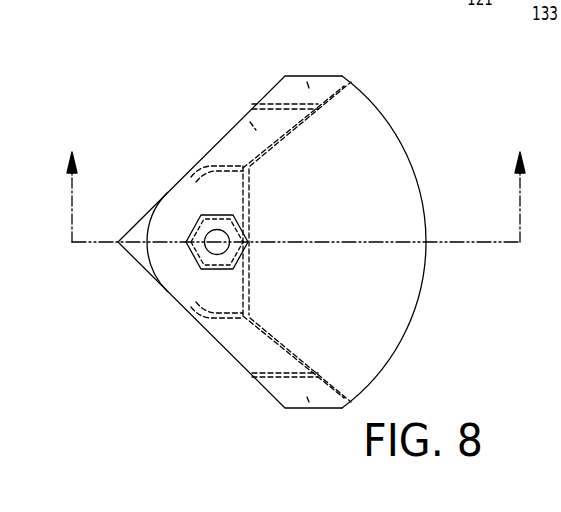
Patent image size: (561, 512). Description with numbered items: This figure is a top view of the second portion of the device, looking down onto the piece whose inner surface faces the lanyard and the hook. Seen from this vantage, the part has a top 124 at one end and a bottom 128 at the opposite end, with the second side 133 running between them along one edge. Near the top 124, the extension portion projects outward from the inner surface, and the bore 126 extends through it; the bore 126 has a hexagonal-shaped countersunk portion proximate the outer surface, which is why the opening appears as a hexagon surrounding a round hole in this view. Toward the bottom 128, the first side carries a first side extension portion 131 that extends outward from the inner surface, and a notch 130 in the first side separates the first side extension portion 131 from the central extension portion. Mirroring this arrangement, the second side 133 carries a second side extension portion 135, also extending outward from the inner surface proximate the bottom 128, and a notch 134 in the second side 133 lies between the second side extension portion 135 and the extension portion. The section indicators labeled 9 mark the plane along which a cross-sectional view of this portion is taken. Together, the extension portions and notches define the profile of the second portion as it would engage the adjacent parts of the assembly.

The section line 9- 9 is at (296, 185).
The top 124 is at (156, 196).
The bore 126 is at (225, 248).
The bottom 128 is at (432, 166).
The notch 130 is at (243, 117).
The first side extension portion 131 is at (312, 73).
The second side 133 is at (223, 373).
The notch 134 is at (223, 336).
The second side extension portion 135 is at (315, 412).